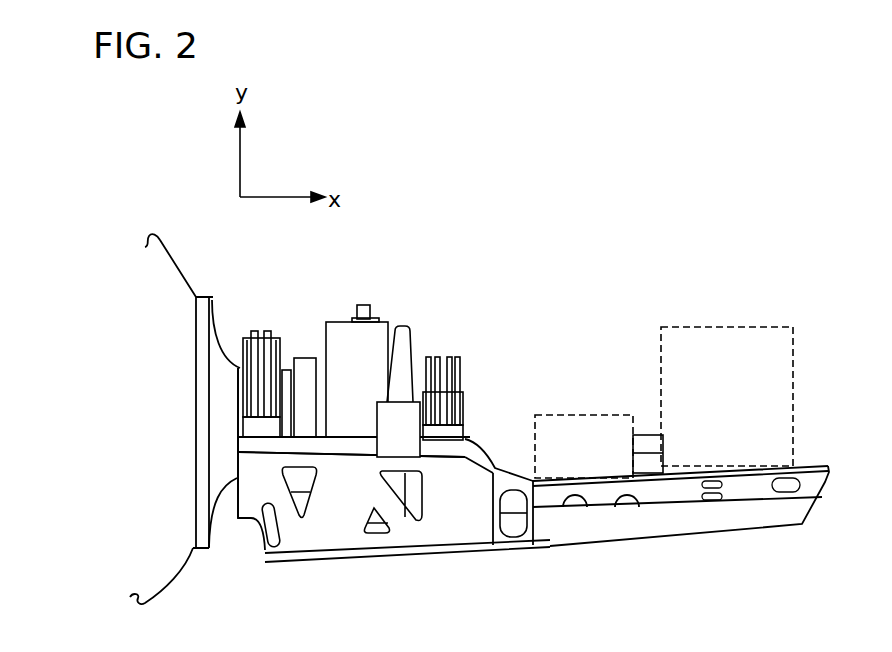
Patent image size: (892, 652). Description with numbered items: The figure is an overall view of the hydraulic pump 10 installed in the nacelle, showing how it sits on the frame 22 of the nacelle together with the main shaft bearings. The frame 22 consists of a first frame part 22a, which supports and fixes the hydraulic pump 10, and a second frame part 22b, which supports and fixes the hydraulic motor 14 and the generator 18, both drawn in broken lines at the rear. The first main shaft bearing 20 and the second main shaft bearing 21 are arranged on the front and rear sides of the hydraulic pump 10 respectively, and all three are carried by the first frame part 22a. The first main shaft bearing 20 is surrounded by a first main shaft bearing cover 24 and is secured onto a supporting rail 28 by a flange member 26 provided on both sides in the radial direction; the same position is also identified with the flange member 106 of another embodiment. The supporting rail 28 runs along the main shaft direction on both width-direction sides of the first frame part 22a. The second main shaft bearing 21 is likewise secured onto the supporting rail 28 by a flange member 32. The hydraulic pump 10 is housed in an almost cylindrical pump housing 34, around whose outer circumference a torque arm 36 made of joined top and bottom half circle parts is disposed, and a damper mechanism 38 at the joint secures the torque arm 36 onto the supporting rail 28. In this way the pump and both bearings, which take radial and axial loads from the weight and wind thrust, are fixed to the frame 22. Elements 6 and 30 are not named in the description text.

The engine room wall / bulkhead 6 is at (185, 265).
The hydraulic pump 10 is at (389, 314).
The hydraulic motor 14 is at (572, 415).
The generator 18 is at (763, 325).
The first main shaft bearing 20 is at (274, 370).
The second main shaft bearing 21 is at (455, 388).
The frame 22 is at (521, 498).
The first frame part 22a is at (253, 547).
The second frame part 22b is at (668, 519).
The first main shaft bearing cover 24 is at (254, 337).
The flange member 26 is at (240, 426).
The flange member 106 is at (351, 454).
The supporting rail 28 is at (257, 448).
The pipe unit 30 is at (460, 368).
The flange member 32 is at (467, 430).
The pump housing 34 is at (336, 330).
The torque arm 36 is at (413, 356).
The damper mechanism 38 is at (373, 448).